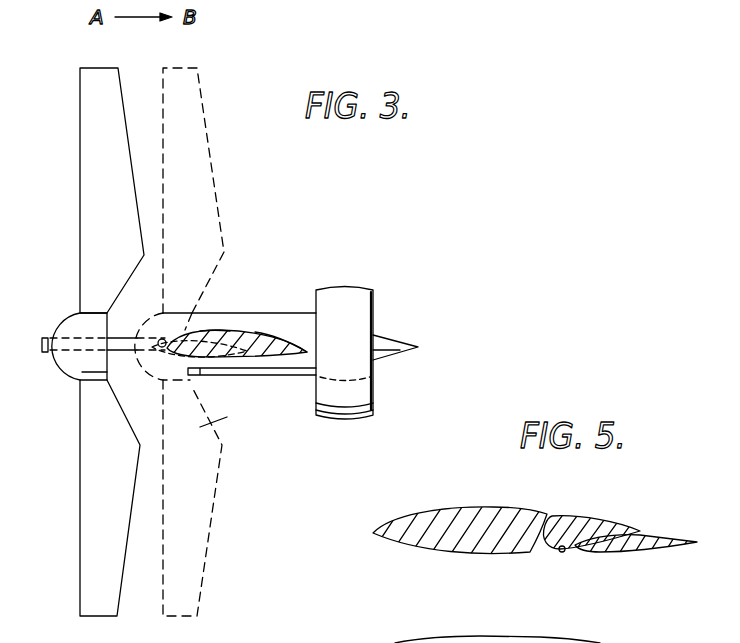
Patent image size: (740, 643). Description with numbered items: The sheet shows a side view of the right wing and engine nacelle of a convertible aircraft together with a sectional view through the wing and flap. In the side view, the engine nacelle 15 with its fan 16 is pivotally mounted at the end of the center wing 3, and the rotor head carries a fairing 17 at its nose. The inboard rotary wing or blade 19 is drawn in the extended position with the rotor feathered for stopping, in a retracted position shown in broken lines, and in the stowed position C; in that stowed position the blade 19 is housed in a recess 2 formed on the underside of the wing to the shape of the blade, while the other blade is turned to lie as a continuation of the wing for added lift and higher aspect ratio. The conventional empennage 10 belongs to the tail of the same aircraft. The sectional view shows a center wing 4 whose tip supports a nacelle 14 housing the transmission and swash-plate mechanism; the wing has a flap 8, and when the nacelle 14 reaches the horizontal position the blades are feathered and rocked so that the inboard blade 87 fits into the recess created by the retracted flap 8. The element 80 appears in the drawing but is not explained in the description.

In FIG. 3, the propeller hub 17 is at (66, 313).
In FIG. 3, the chord line of blade section C is at (210, 347).
In FIG. 3, the blade section 2 is at (212, 352).
In FIG. 3, the blade surface 3 is at (255, 334).
In FIG. 3, the connecting rod 15 is at (295, 380).
In FIG. 3, the blade root 19 is at (207, 363).
In FIG. 3, the nacelle 16 is at (345, 293).
In FIG. 5, the main airfoil 4 is at (446, 512).
In FIG. 5, the flap 8 is at (572, 520).
In FIG. 5, the auxiliary flap 87 is at (660, 550).
In FIG. 5, the airfoil 10 is at (527, 640).
In FIG. 5, the airfoil section 80 is at (367, 631).
In FIG. 5, the flap 14 is at (717, 634).